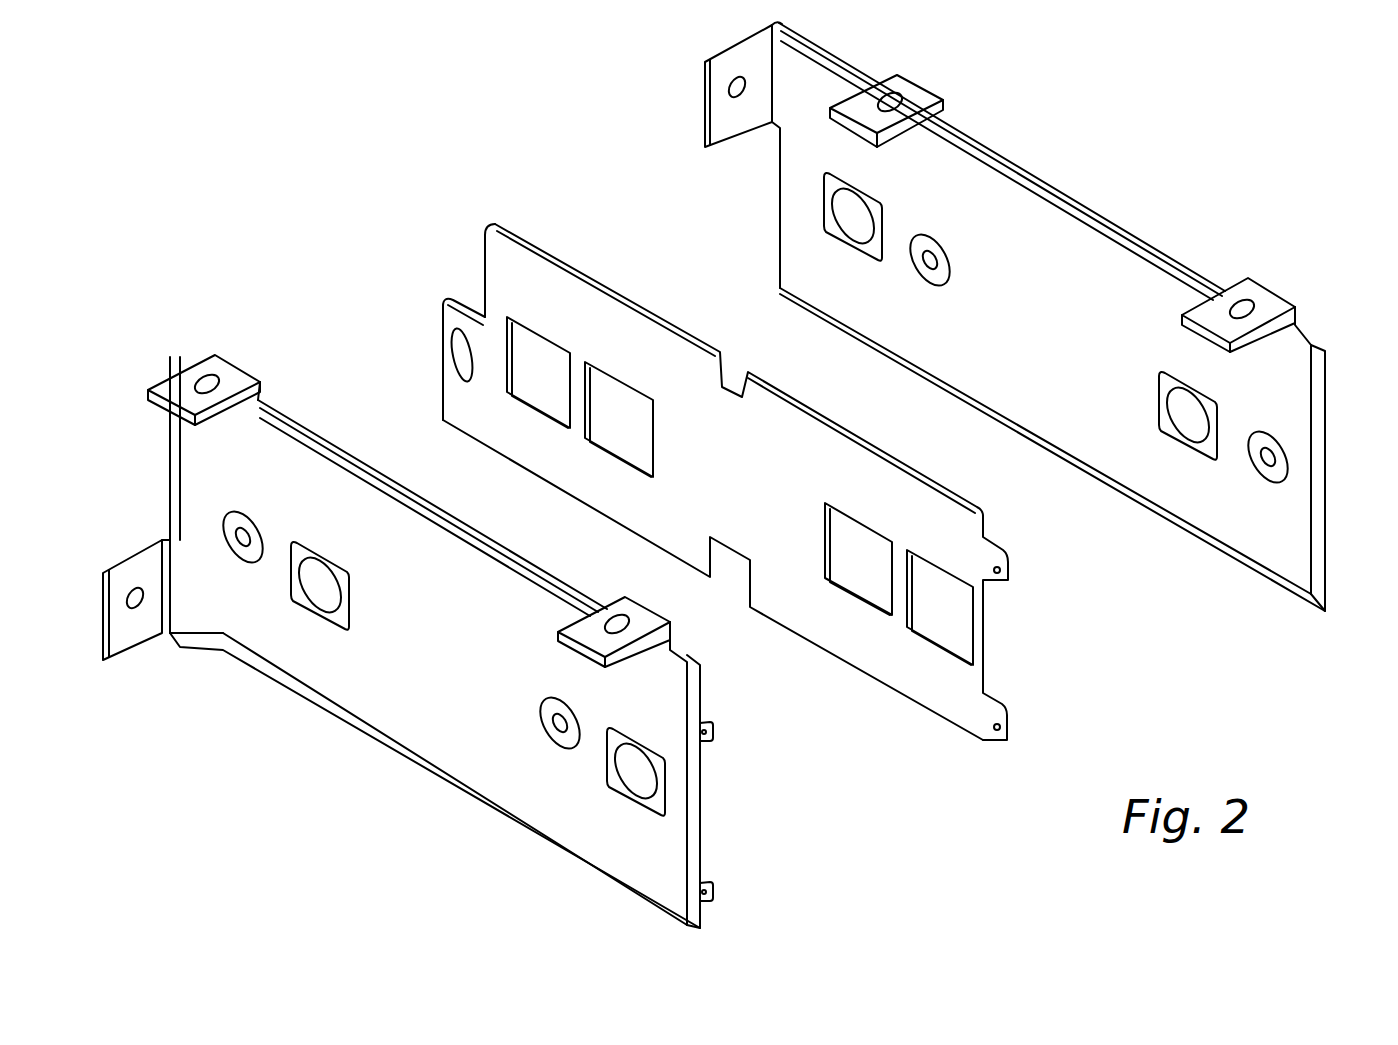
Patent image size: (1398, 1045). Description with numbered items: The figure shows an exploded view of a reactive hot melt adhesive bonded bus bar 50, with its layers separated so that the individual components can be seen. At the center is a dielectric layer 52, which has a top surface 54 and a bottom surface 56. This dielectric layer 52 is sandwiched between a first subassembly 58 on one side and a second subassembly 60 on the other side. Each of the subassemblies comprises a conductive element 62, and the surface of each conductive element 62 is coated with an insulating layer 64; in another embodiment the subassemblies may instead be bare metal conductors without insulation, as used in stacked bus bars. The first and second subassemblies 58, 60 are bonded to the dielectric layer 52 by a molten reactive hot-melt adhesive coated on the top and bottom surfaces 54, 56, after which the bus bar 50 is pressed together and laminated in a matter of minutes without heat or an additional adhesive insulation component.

The reactive hot melt adhesive bonded bus bar 50 is at (405, 197).
The dielectric layer 52 is at (890, 705).
The top surface 54 is at (500, 267).
The bottom surface 56 is at (553, 255).
The first subassembly 58 is at (303, 743).
The second subassembly 60 is at (1057, 173).
The conductive element 62 is at (170, 383).
The insulating layer 64 is at (1175, 493).